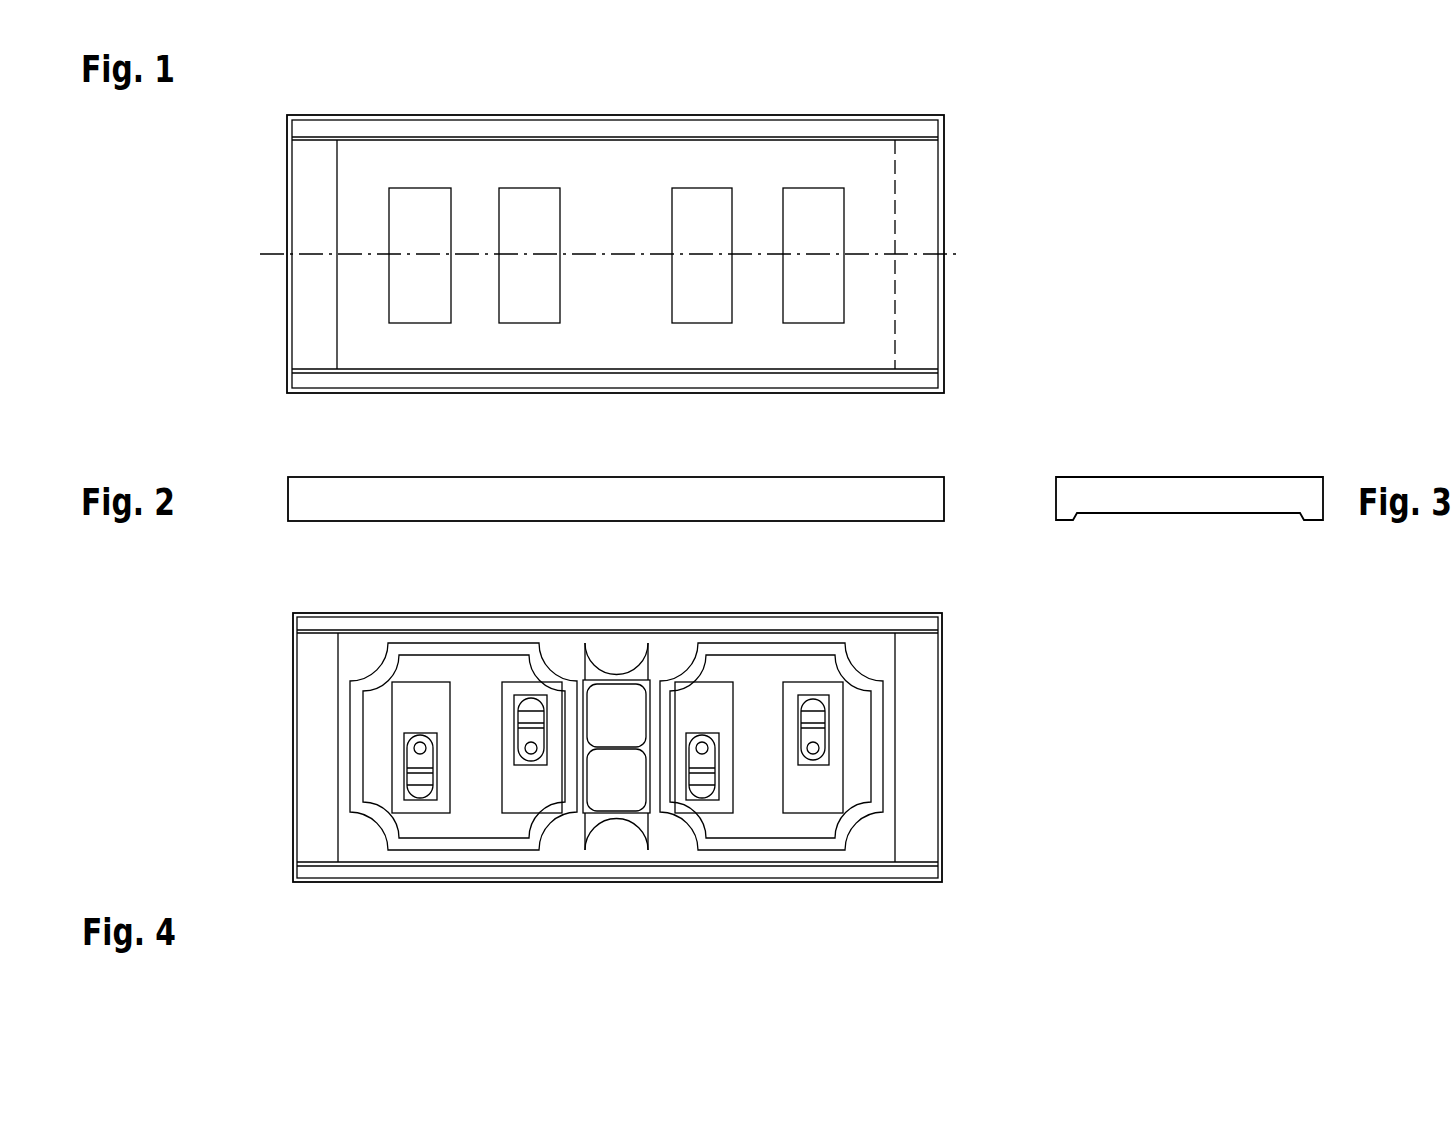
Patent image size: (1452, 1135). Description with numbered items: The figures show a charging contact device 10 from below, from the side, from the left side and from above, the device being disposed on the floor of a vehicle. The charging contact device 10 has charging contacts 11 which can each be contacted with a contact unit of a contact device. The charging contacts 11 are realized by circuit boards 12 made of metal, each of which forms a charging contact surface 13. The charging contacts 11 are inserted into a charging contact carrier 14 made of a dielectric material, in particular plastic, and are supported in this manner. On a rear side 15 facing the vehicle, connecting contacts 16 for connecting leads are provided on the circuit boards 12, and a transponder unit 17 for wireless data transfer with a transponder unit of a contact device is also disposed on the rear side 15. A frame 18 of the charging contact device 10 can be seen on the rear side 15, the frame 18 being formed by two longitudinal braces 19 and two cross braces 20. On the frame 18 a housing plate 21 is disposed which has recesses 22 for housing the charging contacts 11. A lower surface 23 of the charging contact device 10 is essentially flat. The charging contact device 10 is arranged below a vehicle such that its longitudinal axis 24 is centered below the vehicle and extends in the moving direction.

In FIG. 1, the charging contact device 10 is at (978, 283).
In FIG. 4, the charging contact device 10 is at (980, 760).
In FIG. 1, the charging contacts 11 is at (848, 238).
In FIG. 4, the charging contacts 11 is at (848, 790).
In FIG. 1, the circuit boards 12 is at (418, 225).
In FIG. 1, the charging contact surface 13 is at (815, 225).
In FIG. 1, the charging contact carrier 14 is at (287, 307).
In FIG. 2, the charging contact carrier 14 is at (288, 502).
In FIG. 4, the rear side 15 is at (925, 678).
In FIG. 4, the connecting contacts 16 is at (813, 760).
In FIG. 4, the transponder unit 17 is at (615, 780).
In FIG. 4, the frame 18 is at (290, 778).
In FIG. 4, the longitudinal braces 19 is at (552, 623).
In FIG. 4, the cross braces 20 is at (313, 722).
In FIG. 1, the housing plate 21 is at (871, 321).
In FIG. 4, the housing plate 21 is at (873, 843).
In FIG. 1, the recesses 22 is at (419, 327).
In FIG. 1, the lower surface 23 is at (343, 222).
In FIG. 1, the longitudinal axis 24 is at (275, 253).